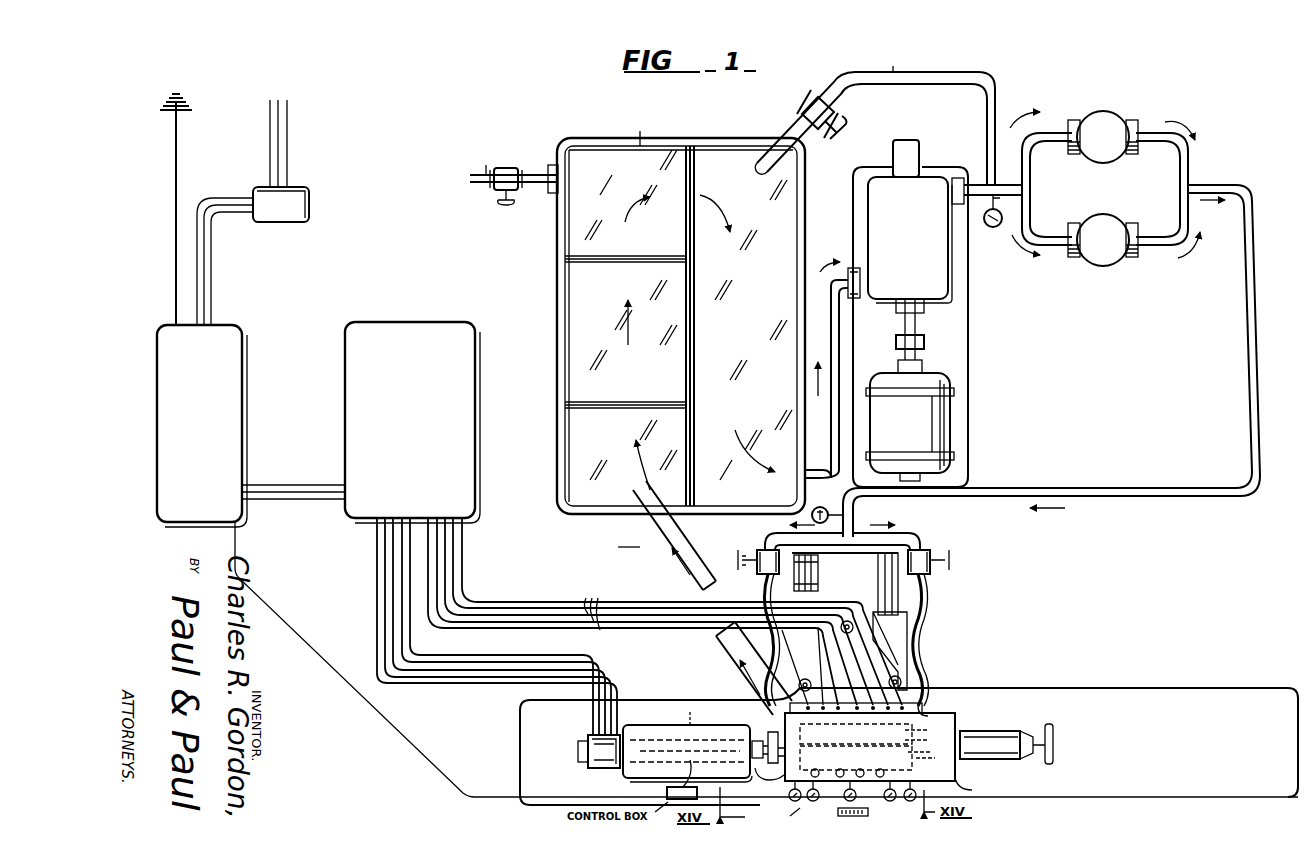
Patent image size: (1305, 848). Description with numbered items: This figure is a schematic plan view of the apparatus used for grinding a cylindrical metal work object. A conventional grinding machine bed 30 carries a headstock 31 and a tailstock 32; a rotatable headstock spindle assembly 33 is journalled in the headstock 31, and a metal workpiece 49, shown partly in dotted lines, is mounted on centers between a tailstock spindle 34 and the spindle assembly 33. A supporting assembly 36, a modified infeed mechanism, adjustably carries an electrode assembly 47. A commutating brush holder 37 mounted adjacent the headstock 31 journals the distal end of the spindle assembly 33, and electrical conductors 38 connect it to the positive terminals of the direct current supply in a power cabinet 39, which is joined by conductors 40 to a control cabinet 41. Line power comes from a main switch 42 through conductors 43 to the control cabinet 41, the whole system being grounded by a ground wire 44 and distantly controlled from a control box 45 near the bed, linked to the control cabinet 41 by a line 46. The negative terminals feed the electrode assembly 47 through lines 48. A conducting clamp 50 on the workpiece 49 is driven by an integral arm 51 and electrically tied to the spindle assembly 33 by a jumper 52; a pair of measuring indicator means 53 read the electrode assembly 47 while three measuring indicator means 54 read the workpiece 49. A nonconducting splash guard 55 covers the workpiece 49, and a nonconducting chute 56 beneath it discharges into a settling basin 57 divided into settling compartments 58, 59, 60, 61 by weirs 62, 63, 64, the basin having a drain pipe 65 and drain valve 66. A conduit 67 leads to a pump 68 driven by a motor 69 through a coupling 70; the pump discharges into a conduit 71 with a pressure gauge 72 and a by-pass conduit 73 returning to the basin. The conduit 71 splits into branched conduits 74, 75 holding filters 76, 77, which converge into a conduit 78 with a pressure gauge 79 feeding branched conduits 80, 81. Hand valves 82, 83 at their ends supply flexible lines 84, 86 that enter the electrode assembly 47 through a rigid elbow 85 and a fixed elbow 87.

The machine bed 30 is at (909, 746).
The headstock 31 is at (628, 725).
The tailstock 32 is at (984, 730).
The headstock spindle assembly 33 is at (576, 756).
The tailstock spindle 34 is at (960, 772).
The supporting assembly 36 is at (860, 588).
The commutating brush holder 37 is at (592, 735).
The electrical conductors 38 is at (402, 593).
The power cabinet 39 is at (412, 422).
The conductors 40 is at (302, 499).
The control cabinet 41 is at (202, 426).
The main switch 42 is at (272, 222).
The conductors 43 is at (198, 277).
The ground wire 44 is at (176, 186).
The control box 45 is at (690, 745).
The line 46 is at (345, 680).
The electrode assembly 47 is at (910, 662).
The lines 48 is at (589, 601).
The metal workpiece 49 is at (870, 747).
The conducting clamp 50 is at (771, 776).
The integral arm 51 is at (770, 740).
The jumper 52 is at (747, 750).
The measuring indicator means 53 is at (827, 807).
The measuring indicator means 54 is at (844, 799).
The splash guard 55 is at (930, 734).
The chute 56 is at (688, 580).
The settling basin 57 is at (770, 140).
The settling compartment 58 is at (570, 452).
The settling compartment 59 is at (570, 290).
The settling compartment 60 is at (590, 150).
The settling compartment 61 is at (780, 226).
The weir 62 is at (608, 404).
The weir 63 is at (608, 246).
The weir 64 is at (694, 170).
The drain pipe 65 is at (534, 175).
The drain valve 66 is at (500, 192).
The conduit 67 is at (831, 350).
The pump 68 is at (908, 313).
The motor 69 is at (910, 420).
The coupling 70 is at (924, 342).
The conduit 71 is at (974, 175).
The pressure gauge 72 is at (993, 228).
The by-pass conduit 73 is at (987, 108).
The branched conduit 74 is at (1046, 133).
The branched conduit 75 is at (1052, 237).
The filter 76 is at (1103, 113).
The filter 77 is at (1106, 266).
The conduit 78 is at (1226, 186).
The pressure gauge 79 is at (808, 512).
The branched conduit 80 is at (778, 534).
The branched conduit 81 is at (918, 544).
The valve 82 is at (752, 556).
The valve 83 is at (930, 556).
The flexible line 84 is at (768, 590).
The rigid elbow 85 is at (792, 700).
The flexible line 86 is at (924, 600).
The fixed elbow 87 is at (928, 700).